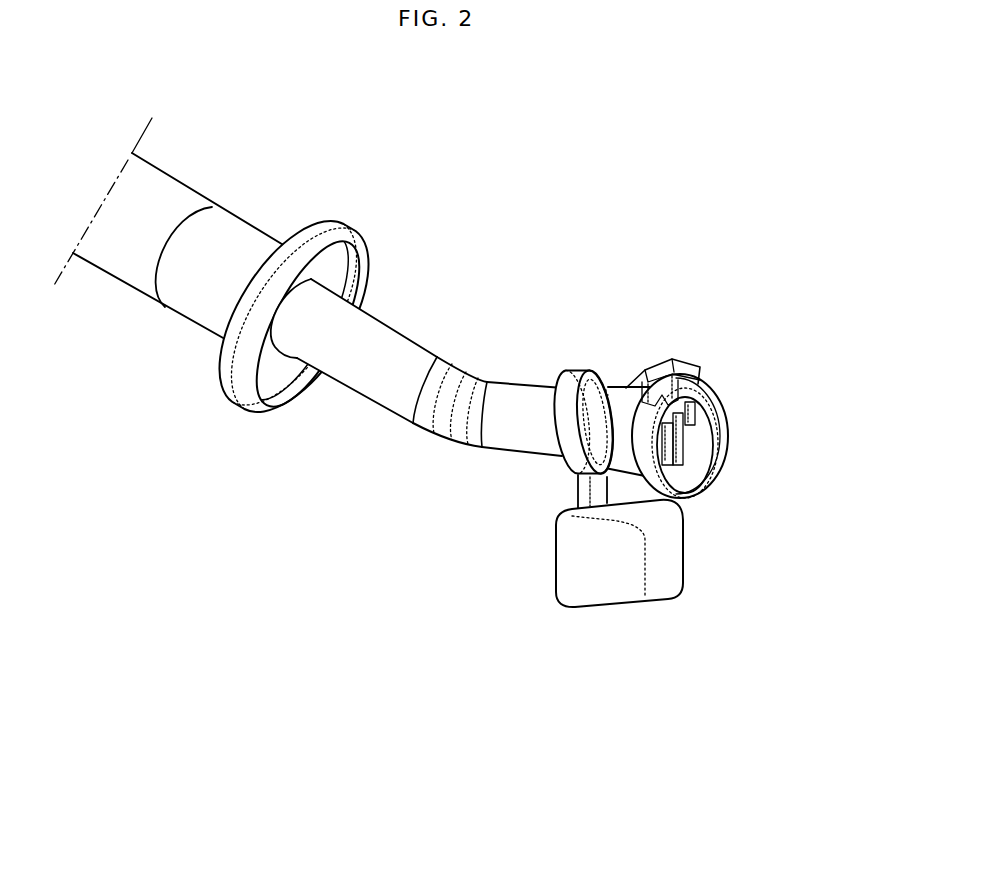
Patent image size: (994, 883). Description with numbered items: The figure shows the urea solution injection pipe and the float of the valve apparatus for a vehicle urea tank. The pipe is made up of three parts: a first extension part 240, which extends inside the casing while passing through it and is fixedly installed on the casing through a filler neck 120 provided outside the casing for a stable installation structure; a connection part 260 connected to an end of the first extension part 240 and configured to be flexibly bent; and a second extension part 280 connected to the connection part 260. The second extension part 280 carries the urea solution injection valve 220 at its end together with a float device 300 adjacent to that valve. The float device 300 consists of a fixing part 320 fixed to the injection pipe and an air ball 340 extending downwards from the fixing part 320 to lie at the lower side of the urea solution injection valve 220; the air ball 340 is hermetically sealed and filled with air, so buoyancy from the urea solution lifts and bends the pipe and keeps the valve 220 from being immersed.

The filler neck 120 is at (232, 237).
The urea solution injection valve 220 is at (693, 405).
The first extension part 240 is at (387, 388).
The connection part 260 is at (465, 385).
The second extension part 280 is at (508, 438).
The float device 300 is at (588, 562).
The fixing part 320 is at (563, 453).
The air ball 340 is at (619, 597).